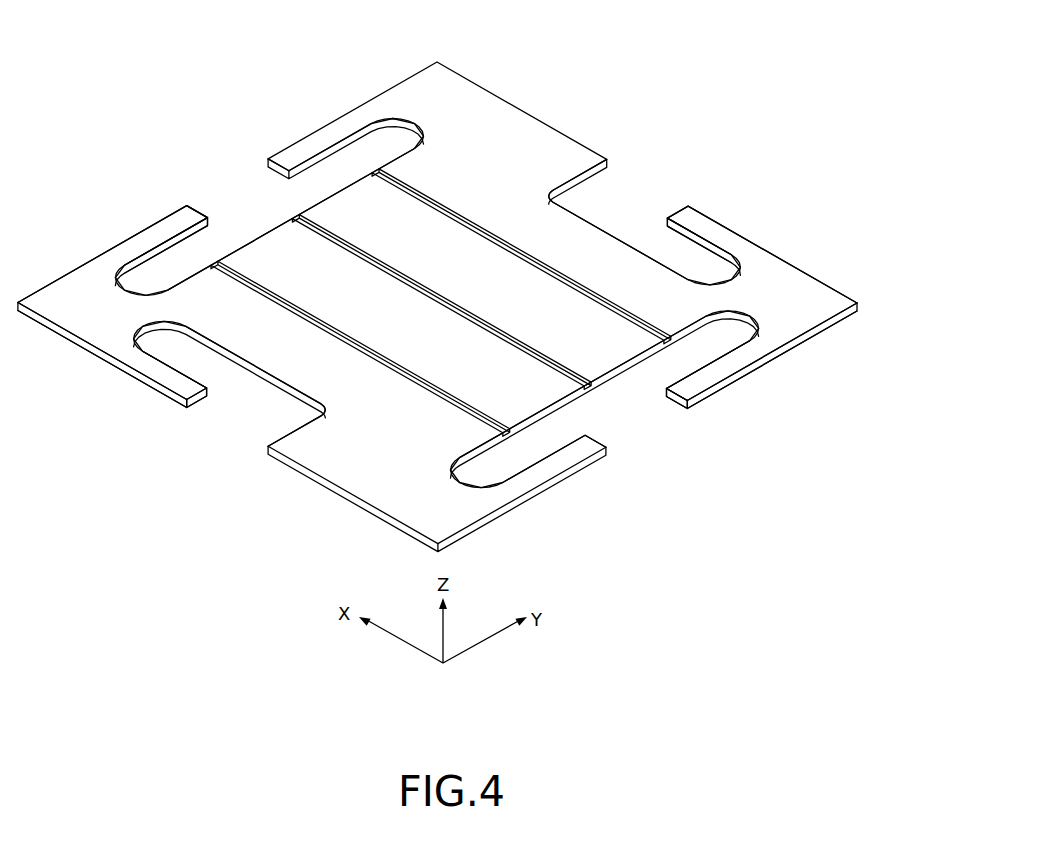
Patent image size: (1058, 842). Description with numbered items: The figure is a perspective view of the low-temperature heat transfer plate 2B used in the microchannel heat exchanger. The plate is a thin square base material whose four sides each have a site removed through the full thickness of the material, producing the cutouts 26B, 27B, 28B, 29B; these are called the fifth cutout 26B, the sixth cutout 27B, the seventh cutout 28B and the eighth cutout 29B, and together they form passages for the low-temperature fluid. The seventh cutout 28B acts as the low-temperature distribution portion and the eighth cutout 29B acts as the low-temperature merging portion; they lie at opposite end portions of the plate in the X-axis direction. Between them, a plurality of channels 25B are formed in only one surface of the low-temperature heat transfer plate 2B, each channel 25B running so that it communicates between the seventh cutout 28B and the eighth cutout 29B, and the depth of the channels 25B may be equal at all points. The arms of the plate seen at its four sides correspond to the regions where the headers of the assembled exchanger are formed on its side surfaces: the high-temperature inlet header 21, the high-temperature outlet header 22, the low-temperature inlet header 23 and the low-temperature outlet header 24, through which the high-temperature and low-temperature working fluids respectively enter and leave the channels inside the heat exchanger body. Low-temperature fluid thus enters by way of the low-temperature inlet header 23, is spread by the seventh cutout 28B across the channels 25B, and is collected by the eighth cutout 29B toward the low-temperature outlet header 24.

The low-temperature heat transfer plate 2B is at (512, 82).
The high-temperature inlet header 21 is at (204, 411).
The high-temperature outlet header 22 is at (656, 189).
The low-temperature inlet header 23 is at (199, 193).
The low-temperature outlet header 24 is at (670, 412).
The channels 25B is at (458, 218).
The fifth cutout 26B is at (283, 438).
The sixth cutout 27B is at (594, 173).
The seventh cutout 28B is at (306, 172).
The eighth cutout 29B is at (591, 427).